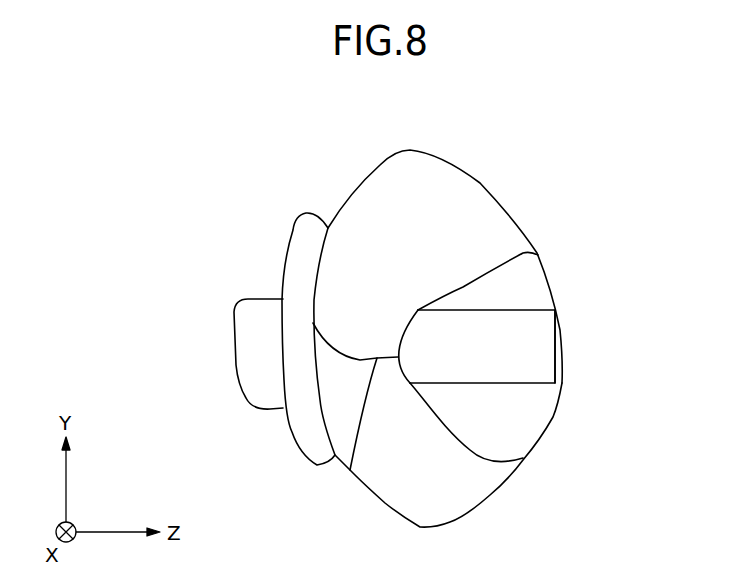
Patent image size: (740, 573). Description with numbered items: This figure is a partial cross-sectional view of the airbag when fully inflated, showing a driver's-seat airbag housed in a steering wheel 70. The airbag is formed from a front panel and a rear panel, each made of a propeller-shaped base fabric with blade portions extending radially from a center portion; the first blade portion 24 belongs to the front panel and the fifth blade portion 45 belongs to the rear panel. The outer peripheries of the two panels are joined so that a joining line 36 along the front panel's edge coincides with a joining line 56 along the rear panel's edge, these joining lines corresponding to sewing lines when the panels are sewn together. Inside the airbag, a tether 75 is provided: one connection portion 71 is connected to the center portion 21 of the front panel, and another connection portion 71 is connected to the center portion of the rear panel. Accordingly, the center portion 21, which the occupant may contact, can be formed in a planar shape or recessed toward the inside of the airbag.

The center portion 21 is at (565, 342).
The first blade portion 24 is at (465, 227).
The joining line 36 is at (330, 432).
The fifth blade portion 45 is at (470, 487).
The joining line 56 is at (350, 470).
The steering wheel 70 is at (303, 245).
The connection portion 71 is at (563, 310).
The tether 75 is at (513, 370).